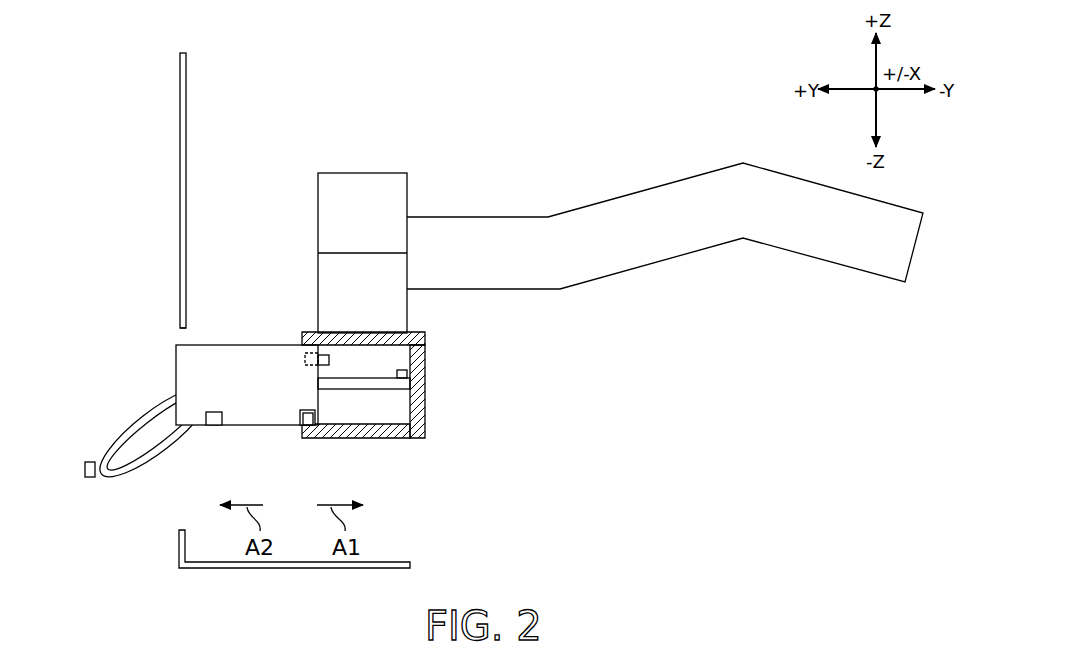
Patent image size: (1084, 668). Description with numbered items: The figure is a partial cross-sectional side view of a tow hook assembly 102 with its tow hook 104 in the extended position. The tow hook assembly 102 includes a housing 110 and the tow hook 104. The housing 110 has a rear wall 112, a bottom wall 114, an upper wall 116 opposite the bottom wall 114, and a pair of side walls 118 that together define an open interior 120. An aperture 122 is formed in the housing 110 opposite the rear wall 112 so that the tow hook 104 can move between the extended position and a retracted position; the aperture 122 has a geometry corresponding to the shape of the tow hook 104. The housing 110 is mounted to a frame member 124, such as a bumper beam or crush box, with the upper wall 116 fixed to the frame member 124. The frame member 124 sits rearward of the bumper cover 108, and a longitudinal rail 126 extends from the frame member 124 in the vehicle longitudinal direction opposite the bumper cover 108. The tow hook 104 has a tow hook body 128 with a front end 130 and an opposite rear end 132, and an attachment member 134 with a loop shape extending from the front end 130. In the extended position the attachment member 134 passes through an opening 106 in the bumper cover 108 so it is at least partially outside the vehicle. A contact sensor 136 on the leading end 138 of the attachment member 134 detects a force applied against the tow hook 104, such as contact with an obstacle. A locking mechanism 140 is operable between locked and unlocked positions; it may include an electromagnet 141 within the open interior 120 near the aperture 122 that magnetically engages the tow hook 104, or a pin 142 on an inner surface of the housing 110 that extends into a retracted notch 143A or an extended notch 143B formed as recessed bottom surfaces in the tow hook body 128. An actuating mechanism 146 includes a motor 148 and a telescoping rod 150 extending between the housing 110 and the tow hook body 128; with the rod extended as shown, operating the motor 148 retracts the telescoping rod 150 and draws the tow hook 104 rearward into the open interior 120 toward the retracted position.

The tow hook assembly 102 is at (107, 165).
The tow hook 104 is at (175, 336).
The opening 106 is at (182, 333).
The bumper cover 108 is at (180, 148).
The housing 110 is at (393, 402).
The rear wall 112 is at (426, 405).
The bottom wall 114 is at (395, 438).
The upper wall 116 is at (367, 331).
The side walls 118 is at (362, 413).
The open interior 120 is at (387, 344).
The aperture 122 is at (303, 334).
The frame member 124 is at (362, 173).
The longitudinal rail 126 is at (624, 196).
The tow hook body 128 is at (233, 426).
The front end 130 is at (176, 381).
The rear end 132 is at (316, 359).
The attachment member 134 is at (125, 488).
The contact sensor 136 is at (90, 462).
The leading end 138 is at (104, 483).
The locking mechanism 140 is at (289, 407).
The electromagnet 141 is at (333, 365).
The pin 142 is at (307, 422).
The retracted notch 143A is at (212, 412).
The extended notch 143B is at (305, 410).
The actuating mechanism 146 is at (392, 370).
The motor 148 is at (411, 377).
The telescoping rod 150 is at (401, 392).